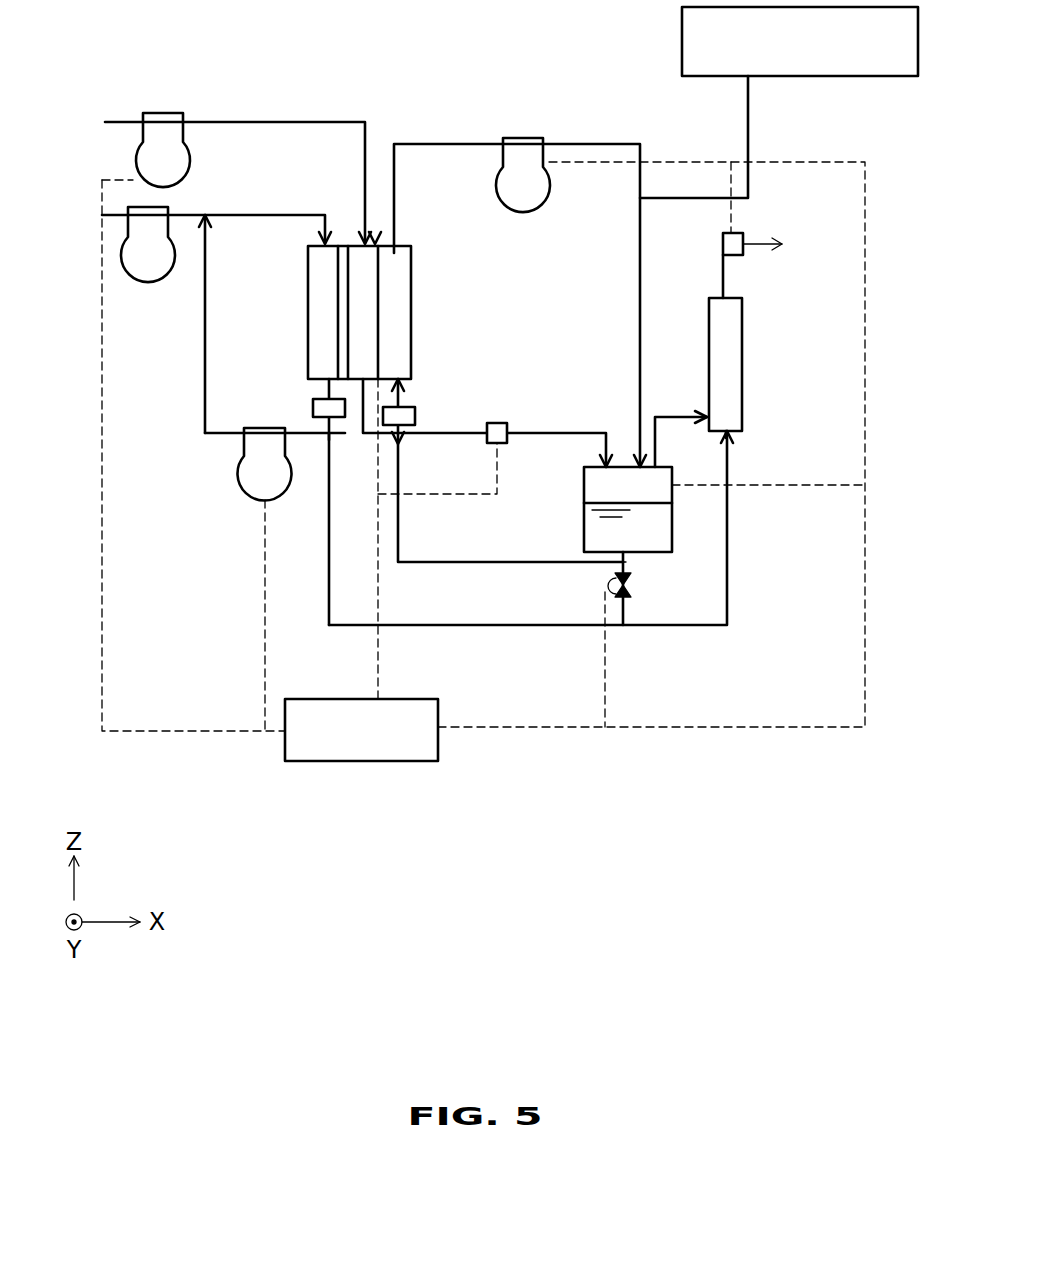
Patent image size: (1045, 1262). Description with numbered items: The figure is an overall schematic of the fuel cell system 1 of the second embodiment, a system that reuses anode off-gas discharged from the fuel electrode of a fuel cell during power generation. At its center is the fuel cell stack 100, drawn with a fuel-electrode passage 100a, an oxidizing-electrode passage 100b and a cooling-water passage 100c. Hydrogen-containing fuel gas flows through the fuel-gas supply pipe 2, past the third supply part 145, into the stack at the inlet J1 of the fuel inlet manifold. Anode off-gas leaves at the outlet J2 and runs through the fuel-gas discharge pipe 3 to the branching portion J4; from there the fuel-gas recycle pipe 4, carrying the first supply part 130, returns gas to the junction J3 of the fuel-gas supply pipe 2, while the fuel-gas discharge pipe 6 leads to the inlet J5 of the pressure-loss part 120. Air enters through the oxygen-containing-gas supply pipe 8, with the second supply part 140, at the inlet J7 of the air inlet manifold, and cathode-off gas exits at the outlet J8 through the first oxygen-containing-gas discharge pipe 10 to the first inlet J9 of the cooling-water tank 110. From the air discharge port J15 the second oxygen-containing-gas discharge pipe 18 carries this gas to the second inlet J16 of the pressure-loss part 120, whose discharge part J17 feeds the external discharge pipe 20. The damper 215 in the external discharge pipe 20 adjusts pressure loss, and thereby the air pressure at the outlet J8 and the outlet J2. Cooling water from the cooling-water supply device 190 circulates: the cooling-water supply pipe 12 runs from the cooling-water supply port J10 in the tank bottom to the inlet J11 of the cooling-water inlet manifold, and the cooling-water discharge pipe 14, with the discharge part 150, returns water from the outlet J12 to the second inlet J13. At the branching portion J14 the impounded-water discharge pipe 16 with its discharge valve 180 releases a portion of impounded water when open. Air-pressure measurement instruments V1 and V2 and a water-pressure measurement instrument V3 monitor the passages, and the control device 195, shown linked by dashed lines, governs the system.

The fuel cell system 1 is at (471, 82).
The fuel-gas supply pipe 2 is at (280, 214).
The fuel-gas discharge pipe 3 is at (348, 393).
The fuel-gas recycle pipe 4 is at (204, 408).
The fuel-gas discharge pipe 6 is at (337, 626).
The oxygen-containing-gas supply pipe 8 is at (271, 121).
The first oxygen-containing-gas discharge pipe 10 is at (547, 432).
The cooling-water supply pipe 12 is at (430, 561).
The cooling-water discharge pipe 14 is at (605, 143).
The impounded-water discharge pipe 16 is at (630, 582).
The second oxygen-containing-gas discharge pipe 18 is at (673, 415).
The external discharge pipe 20 is at (752, 238).
The fuel cell stack 100 is at (368, 289).
The fuel-electrode passage 100a is at (337, 323).
The oxidizing-electrode passage 100b is at (372, 281).
The cooling-water passage 100c is at (397, 328).
The cooling-water tank 110 is at (582, 522).
The pressure-loss part 120 is at (745, 400).
The first supply part 130 is at (250, 484).
The second supply part 140 is at (148, 157).
The third supply part 145 is at (170, 215).
The discharge part 150 is at (524, 210).
The discharge valve 180 is at (625, 600).
The cooling-water supply device 190 is at (790, 78).
The control device 195 is at (360, 762).
The damper 215 is at (722, 244).
The air-pressure measurement instrument V1 is at (496, 446).
The air-pressure measurement instrument V2 is at (312, 406).
The water-pressure measurement instrument V3 is at (417, 415).
The inlet of the fuel inlet manifold J1 is at (326, 240).
The outlet of the fuel outlet manifold J2 is at (327, 384).
The junction J3 is at (205, 225).
The branching portion J4 is at (328, 440).
The inlet of the pressure-loss part J5 is at (730, 434).
The inlet of the air inlet manifold J7 is at (375, 240).
The outlet of the air outlet manifold J8 is at (362, 380).
The first inlet of the cooling-water tank J9 is at (600, 460).
The cooling-water supply port J10 is at (628, 558).
The inlet of the cooling-water inlet manifold J11 is at (403, 383).
The outlet of the cooling-water outlet manifold J12 is at (396, 244).
The second inlet of the cooling-water tank J13 is at (636, 462).
The branching portion J14 is at (618, 570).
The air discharge port J15 is at (656, 466).
The second inlet of the pressure-loss part J16 is at (703, 412).
The discharge part of the pressure-loss part J17 is at (730, 290).